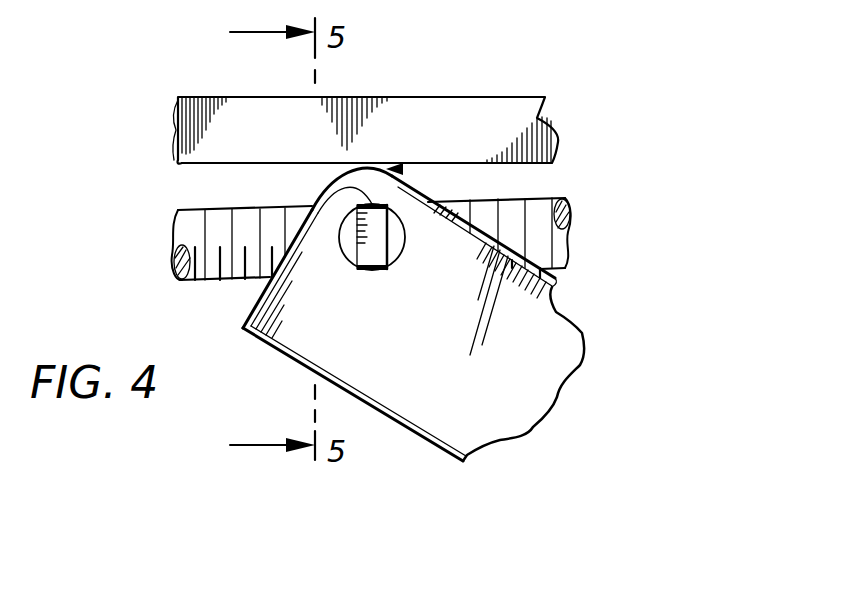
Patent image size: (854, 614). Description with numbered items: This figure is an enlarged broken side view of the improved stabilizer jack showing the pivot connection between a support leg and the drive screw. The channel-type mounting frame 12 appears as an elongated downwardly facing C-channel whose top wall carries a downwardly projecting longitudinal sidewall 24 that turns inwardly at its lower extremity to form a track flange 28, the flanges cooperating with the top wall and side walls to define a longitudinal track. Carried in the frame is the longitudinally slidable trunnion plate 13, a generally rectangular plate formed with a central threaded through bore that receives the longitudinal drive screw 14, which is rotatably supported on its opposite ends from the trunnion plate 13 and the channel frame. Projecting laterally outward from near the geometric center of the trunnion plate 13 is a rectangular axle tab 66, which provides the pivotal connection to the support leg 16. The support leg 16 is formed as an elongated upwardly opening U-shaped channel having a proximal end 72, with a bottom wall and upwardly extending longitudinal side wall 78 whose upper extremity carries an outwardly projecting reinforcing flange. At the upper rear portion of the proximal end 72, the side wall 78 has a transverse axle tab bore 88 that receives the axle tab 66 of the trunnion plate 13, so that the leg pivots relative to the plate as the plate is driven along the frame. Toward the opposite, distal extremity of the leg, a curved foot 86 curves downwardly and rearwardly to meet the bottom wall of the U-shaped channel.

The channel-type mounting frame 12 is at (482, 93).
The trunnion plate 13 is at (405, 172).
The drive screw 14 is at (215, 290).
The support leg 16 is at (457, 342).
The longitudinal sidewall 24 is at (192, 132).
The track flange 28 is at (200, 165).
The axle tab 66 is at (326, 177).
The proximal end 72 is at (353, 398).
The longitudinal side wall 78 is at (553, 356).
The curved foot 86 is at (637, 0).
The axle tab bore 88 is at (343, 240).